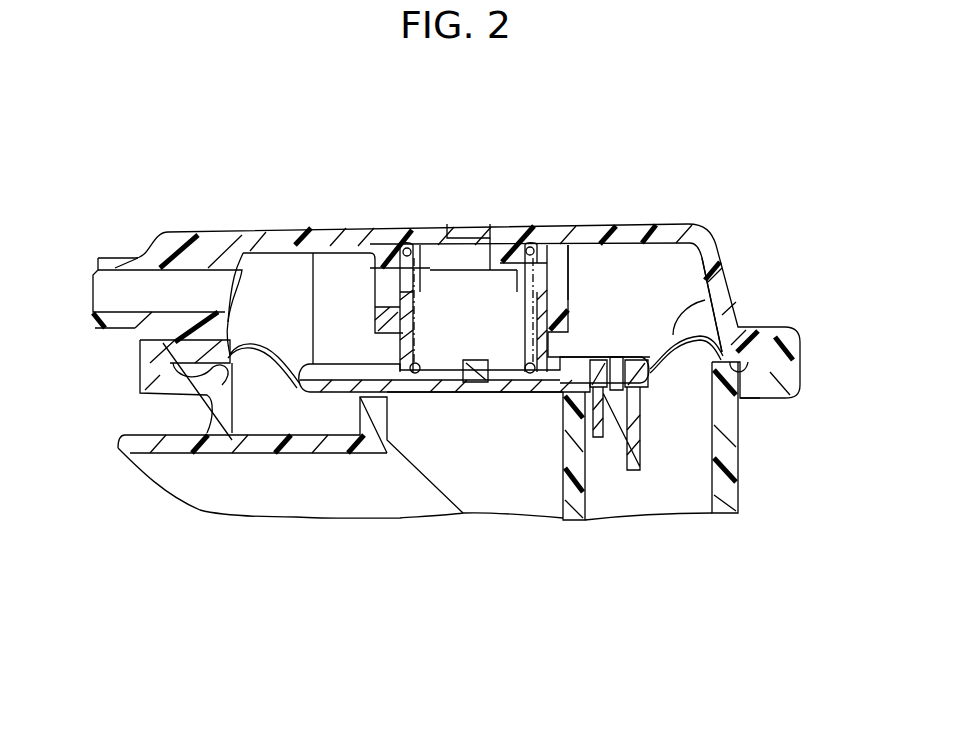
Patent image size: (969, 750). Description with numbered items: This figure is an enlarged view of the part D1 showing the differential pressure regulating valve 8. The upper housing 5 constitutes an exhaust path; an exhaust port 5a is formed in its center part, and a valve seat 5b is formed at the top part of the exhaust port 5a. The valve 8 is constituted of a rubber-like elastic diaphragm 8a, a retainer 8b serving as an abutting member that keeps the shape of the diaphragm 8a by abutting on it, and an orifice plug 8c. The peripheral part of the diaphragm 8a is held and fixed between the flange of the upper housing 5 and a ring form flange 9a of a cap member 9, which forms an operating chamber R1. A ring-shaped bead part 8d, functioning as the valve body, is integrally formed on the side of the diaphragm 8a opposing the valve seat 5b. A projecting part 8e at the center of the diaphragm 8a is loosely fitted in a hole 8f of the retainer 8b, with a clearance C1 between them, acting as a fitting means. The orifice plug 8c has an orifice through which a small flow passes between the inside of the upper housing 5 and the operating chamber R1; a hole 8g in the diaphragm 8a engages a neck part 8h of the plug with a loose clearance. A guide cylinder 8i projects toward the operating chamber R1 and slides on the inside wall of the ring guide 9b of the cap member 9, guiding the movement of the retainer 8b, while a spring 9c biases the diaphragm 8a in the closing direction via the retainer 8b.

The part D1 is at (153, 138).
The upper housing 5 is at (740, 490).
The exhaust port 5a is at (562, 493).
The valve seat 5b is at (560, 410).
The differential pressure regulating valve 8 is at (608, 306).
The diaphragm 8a is at (713, 313).
The retainer 8b is at (578, 260).
The orifice plug 8c is at (590, 445).
The bead part (valve body) 8d is at (615, 330).
The projecting part 8e is at (482, 360).
The hole (engaging hole) 8f is at (482, 350).
The hole 8g is at (640, 397).
The neck part 8h is at (600, 437).
The guide cylinder 8i is at (397, 347).
The cap member 9 is at (626, 226).
The ring form flange 9a is at (757, 327).
The ring guide 9b is at (380, 293).
The spring 9c is at (530, 330).
The operating chamber R1 is at (277, 302).
The clearance C1 is at (457, 358).